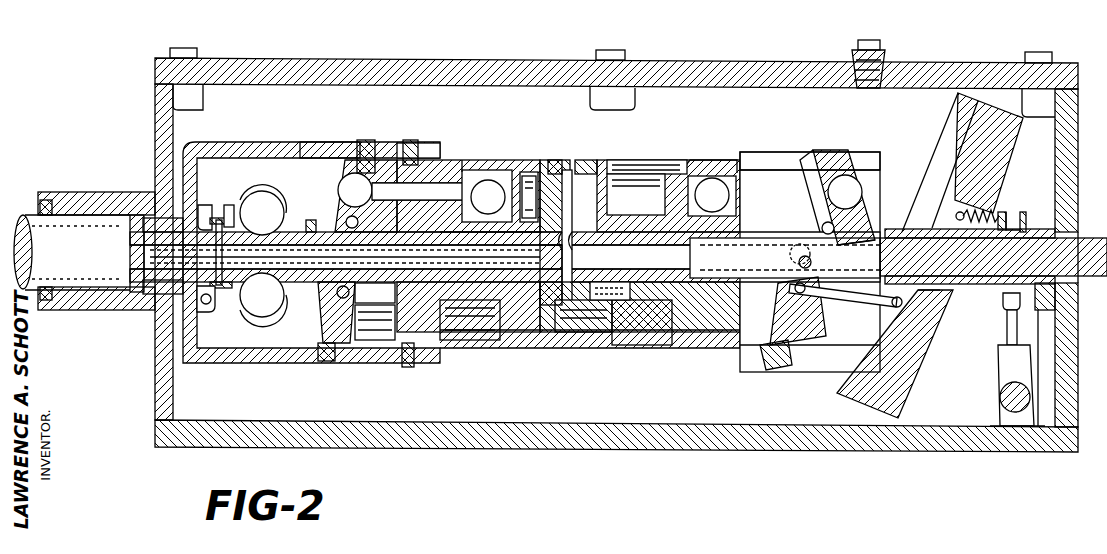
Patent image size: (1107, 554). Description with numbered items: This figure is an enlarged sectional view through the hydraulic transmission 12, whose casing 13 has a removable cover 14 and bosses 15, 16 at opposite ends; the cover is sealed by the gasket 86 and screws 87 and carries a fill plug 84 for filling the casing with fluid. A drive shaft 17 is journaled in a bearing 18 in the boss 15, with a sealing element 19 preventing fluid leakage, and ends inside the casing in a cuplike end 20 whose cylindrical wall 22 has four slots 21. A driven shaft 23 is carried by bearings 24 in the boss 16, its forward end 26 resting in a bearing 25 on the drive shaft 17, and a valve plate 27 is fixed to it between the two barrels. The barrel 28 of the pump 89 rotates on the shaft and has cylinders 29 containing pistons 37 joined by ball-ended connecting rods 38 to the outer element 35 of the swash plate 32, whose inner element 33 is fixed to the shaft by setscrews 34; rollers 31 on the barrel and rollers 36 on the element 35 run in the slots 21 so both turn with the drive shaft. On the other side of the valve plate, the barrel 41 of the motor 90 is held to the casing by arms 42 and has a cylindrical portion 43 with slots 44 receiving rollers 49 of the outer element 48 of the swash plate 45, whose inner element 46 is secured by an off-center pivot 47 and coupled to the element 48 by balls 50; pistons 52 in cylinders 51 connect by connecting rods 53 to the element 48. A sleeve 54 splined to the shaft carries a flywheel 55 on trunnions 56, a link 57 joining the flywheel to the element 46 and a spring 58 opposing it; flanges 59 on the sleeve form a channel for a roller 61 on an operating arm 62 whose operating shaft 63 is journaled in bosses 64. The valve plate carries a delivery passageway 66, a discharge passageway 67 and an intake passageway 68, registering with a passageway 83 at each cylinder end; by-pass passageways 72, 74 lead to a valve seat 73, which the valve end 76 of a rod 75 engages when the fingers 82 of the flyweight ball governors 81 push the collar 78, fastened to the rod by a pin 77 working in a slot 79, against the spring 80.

The housing 12 is at (625, 242).
The casing 13 is at (510, 448).
The cover 14 is at (792, 76).
The boss 15 is at (95, 192).
The boss 16 is at (1082, 235).
The drive shaft 17 is at (75, 255).
The bearing 18 is at (68, 310).
The sealing element 19 is at (40, 205).
The cuplike end 20 is at (285, 142).
The slots 21 is at (405, 148).
The cylindrical wall 22 is at (332, 143).
The driven shaft 23 is at (1018, 264).
The bearings 24 is at (1045, 300).
The bearing 25 is at (135, 300).
The forward end 26 is at (143, 264).
The valve plate 27 is at (560, 347).
The barrel 28 is at (480, 166).
The cylinders 29 is at (505, 160).
The rollers 31 is at (418, 150).
The swash plate 32 is at (318, 318).
The inner element 33 is at (272, 316).
The setscrews 34 is at (311, 220).
The outer element 35 is at (342, 178).
The rollers 36 is at (370, 148).
The piston 37 is at (528, 168).
The connecting rods 38 is at (470, 182).
The barrel 41 is at (652, 165).
The arms 42 is at (785, 258).
The cylindrical portion 43 is at (775, 152).
The slots 44 is at (823, 152).
The swash plate 45 is at (875, 182).
The inner element 46 is at (812, 232).
The pivot 47 is at (798, 263).
The outer element 48 is at (873, 202).
The rollers 49 is at (876, 160).
The balls 50 is at (866, 222).
The cylinders 51 is at (632, 172).
The piston 52 is at (642, 322).
The connecting rods 53 is at (766, 362).
The sleeve 54 is at (1032, 214).
The flywheel 55 is at (1008, 132).
The trunnions 56 is at (962, 254).
The link 57 is at (850, 302).
The spring 58 is at (1000, 206).
The flanges 59 is at (1002, 300).
The roller 61 is at (1006, 312).
The operating arm 62 is at (998, 358).
The operating shaft 63 is at (1000, 395).
The bosses 64 is at (1000, 416).
The fluid delivery passageway 66 is at (540, 346).
The fluid discharge passageway 67 is at (576, 172).
The fluid intake passageway 68 is at (560, 168).
The by-pass passageway 72 is at (636, 194).
The valve seat 73 is at (540, 279).
The by-pass passageway 74 is at (610, 288).
The rod 75 is at (462, 250).
The valve end 76 is at (542, 250).
The pin 77 is at (190, 249).
The collar 78 is at (230, 208).
The slot 79 is at (262, 213).
The spring 80 is at (262, 295).
The flyweight ball governors 81 is at (268, 196).
The fingers 82 is at (210, 205).
The passageway 83 is at (520, 192).
The fill plug 84 is at (878, 50).
The gasket 86 is at (1080, 78).
The screws 87 is at (1038, 52).
The pump 89 is at (468, 160).
The motor 90 is at (742, 156).